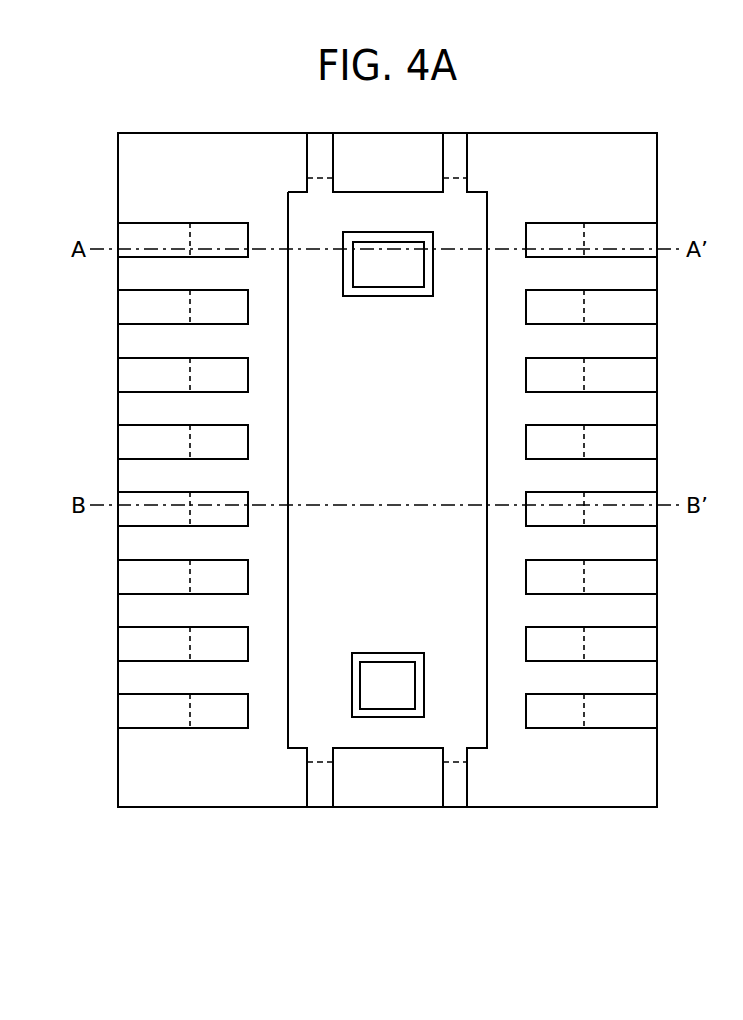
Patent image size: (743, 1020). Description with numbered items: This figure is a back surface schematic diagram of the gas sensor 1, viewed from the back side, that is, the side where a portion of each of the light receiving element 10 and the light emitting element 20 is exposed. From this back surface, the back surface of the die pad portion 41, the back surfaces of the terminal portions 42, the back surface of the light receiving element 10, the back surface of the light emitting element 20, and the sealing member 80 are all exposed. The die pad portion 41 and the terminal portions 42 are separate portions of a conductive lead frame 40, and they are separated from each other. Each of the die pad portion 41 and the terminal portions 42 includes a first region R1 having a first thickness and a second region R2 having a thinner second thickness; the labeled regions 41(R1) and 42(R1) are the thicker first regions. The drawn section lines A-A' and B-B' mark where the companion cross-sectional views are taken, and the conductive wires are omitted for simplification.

The gas sensor 1 is at (630, 103).
The light receiving element 10 is at (403, 685).
The light emitting element 20 is at (413, 264).
The conductive lead frame 40 is at (235, 861).
The die pad portion 41 is at (300, 736).
The terminal portions 42 is at (155, 233).
The sealing member 80 is at (588, 767).